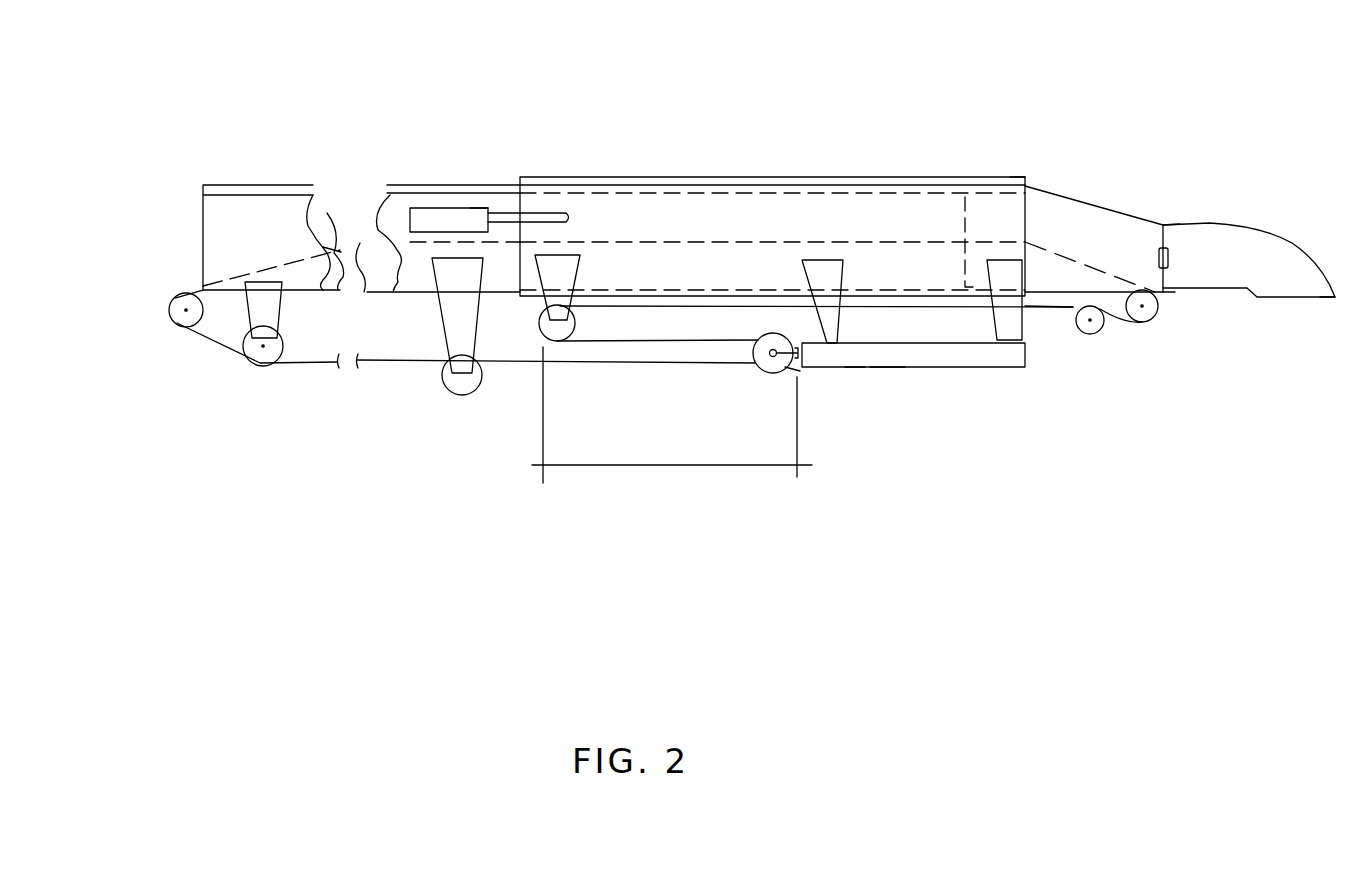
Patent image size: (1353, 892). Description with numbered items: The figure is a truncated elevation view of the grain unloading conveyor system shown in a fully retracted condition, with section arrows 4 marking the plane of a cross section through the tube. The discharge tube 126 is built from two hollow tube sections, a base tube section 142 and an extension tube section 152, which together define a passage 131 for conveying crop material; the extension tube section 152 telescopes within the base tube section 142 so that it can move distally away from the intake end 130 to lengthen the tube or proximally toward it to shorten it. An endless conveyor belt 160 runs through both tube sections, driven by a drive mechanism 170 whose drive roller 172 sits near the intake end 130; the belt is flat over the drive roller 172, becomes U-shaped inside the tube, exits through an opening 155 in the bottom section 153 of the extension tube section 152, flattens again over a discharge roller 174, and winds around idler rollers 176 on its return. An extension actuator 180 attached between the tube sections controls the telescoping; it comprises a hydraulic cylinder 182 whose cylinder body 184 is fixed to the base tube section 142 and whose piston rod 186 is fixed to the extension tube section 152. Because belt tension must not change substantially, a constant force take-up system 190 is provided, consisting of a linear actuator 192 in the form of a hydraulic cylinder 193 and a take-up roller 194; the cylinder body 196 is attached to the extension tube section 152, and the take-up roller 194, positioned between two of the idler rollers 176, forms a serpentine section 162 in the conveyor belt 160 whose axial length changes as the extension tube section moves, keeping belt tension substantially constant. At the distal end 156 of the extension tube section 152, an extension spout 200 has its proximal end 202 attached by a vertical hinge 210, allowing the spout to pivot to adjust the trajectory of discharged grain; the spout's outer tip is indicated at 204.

The section line 4- 4 is at (650, 154).
The discharge tube 126 is at (759, 170).
The intake end 130 is at (213, 227).
The passage 131 is at (318, 225).
The base tube section 142 is at (233, 220).
The extension tube section 152 is at (985, 207).
The bottom section 153 is at (1062, 296).
The opening 155 is at (1165, 297).
The distal end 156 is at (1150, 233).
The conveyor belt 160 is at (307, 363).
The serpentine section 162 is at (660, 463).
The drive mechanism 170 is at (160, 322).
The drive roller 172 is at (172, 299).
The discharge roller 174 is at (1145, 322).
The idler rollers 176 is at (255, 353).
The extension actuator 180 is at (452, 200).
The hydraulic cylinder 182 is at (472, 218).
The cylinder body 184 is at (423, 218).
The piston rod 186 is at (558, 218).
The constant force take-up system 190 is at (818, 374).
The linear actuator 192 is at (882, 371).
The hydraulic cylinder 193 is at (952, 353).
The take-up roller 194 is at (790, 370).
The cylinder body 196 is at (855, 370).
The extension spout 200 is at (1222, 275).
The proximal end 202 is at (1170, 227).
The nozzle tip 204 is at (1330, 300).
The vertical hinge 210 is at (1170, 263).